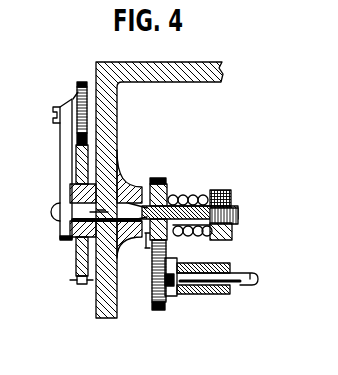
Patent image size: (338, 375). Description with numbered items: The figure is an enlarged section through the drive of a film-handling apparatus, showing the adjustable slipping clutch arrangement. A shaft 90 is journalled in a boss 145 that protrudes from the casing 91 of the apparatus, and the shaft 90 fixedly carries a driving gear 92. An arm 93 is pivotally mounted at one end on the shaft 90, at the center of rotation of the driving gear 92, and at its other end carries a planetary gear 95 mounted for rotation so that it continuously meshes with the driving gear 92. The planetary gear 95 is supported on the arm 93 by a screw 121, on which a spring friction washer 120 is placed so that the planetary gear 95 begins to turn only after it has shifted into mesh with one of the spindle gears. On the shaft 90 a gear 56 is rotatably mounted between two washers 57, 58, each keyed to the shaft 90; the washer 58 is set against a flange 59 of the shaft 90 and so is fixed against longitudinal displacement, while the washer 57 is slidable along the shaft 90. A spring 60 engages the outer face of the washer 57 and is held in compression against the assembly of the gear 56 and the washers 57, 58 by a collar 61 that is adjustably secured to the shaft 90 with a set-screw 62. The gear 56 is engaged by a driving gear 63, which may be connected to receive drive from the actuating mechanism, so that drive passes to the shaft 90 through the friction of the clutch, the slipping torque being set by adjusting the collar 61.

The casing 91 is at (165, 82).
The boss 145 is at (127, 184).
The arm 93 is at (63, 167).
The screw 121 is at (58, 107).
The planetary gear 95 is at (82, 83).
The spring friction washer 120 is at (78, 92).
The driving gear 92 is at (80, 284).
The shaft 90 is at (239, 217).
The washer 58 is at (151, 258).
The gear 56 is at (156, 178).
The flange 59 is at (148, 236).
The driving gear 63 is at (161, 307).
The washer 57 is at (169, 189).
The spring 60 is at (180, 236).
The set-screw 62 is at (231, 196).
The collar 61 is at (232, 238).